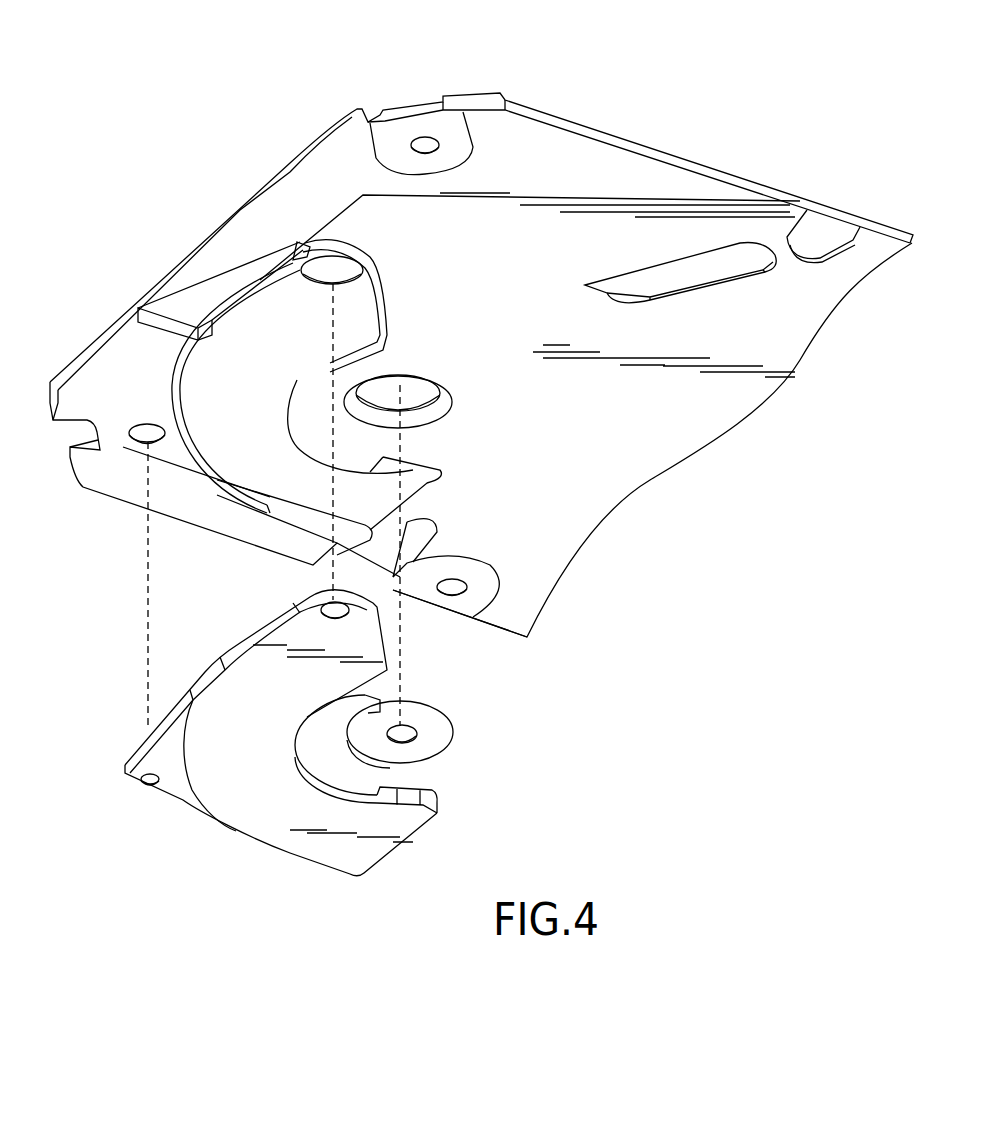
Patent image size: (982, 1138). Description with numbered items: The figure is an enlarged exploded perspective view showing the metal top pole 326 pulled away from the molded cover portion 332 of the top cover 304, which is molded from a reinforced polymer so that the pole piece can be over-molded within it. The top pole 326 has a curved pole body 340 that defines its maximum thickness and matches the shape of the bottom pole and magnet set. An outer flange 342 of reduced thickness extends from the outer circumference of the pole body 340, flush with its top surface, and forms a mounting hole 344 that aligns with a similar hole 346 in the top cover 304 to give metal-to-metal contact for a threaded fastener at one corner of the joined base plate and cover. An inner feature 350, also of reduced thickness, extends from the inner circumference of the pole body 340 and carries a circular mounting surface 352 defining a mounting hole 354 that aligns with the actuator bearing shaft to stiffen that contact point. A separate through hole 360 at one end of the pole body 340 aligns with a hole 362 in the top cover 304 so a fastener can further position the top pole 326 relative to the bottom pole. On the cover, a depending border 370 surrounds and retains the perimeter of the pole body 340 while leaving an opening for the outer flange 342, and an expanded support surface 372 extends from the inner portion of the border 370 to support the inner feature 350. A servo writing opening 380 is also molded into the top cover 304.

The top cover 304 is at (726, 112).
The top pole 326 is at (299, 761).
The cover portion 332 is at (623, 482).
The pole body 340 is at (323, 845).
The outer flange 342 is at (150, 755).
The mounting hole 344 is at (151, 786).
The hole 346 is at (158, 443).
The inner feature 350 is at (378, 775).
The circular mounting surface 352 is at (421, 716).
The mounting hole 354 is at (405, 735).
The through hole 360 is at (327, 618).
The hole 362 is at (320, 278).
The depending border 370 is at (312, 397).
The expanded support surface 372 is at (303, 408).
The servo writing opening 380 is at (702, 287).